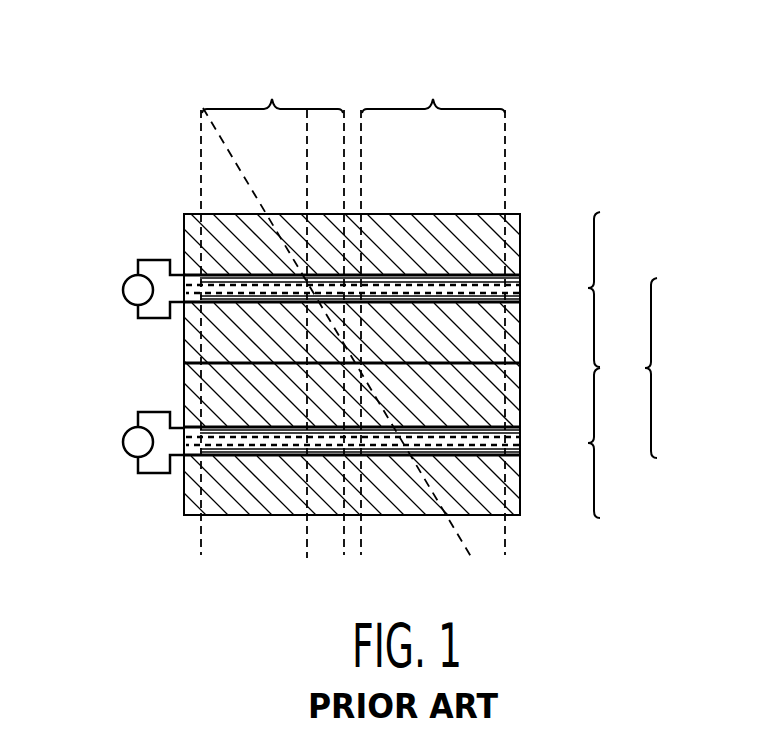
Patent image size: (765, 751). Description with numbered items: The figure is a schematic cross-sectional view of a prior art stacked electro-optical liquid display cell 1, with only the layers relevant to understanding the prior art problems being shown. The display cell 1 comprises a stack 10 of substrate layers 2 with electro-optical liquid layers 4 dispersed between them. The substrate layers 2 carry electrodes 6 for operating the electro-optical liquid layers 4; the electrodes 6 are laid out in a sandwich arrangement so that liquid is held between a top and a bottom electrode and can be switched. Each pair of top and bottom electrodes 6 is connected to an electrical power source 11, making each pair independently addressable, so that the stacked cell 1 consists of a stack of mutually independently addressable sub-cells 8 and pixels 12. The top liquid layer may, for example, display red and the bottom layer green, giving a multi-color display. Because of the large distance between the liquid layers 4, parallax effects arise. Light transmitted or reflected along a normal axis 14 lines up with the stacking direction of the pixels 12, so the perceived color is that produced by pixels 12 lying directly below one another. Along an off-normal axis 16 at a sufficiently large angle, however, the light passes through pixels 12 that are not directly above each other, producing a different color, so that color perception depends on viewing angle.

The stacked display cell 1 is at (57, 129).
The substrate layer 2 is at (512, 234).
The electro-optical liquid layer 4 is at (520, 288).
The electrode 6 is at (518, 274).
The sub-cell 8 is at (607, 365).
The stack 10 is at (671, 368).
The electrical power source 11 is at (123, 289).
The pixel 12 is at (353, 313).
The normal axis 14 is at (308, 104).
The off-normal axis 16 is at (204, 104).